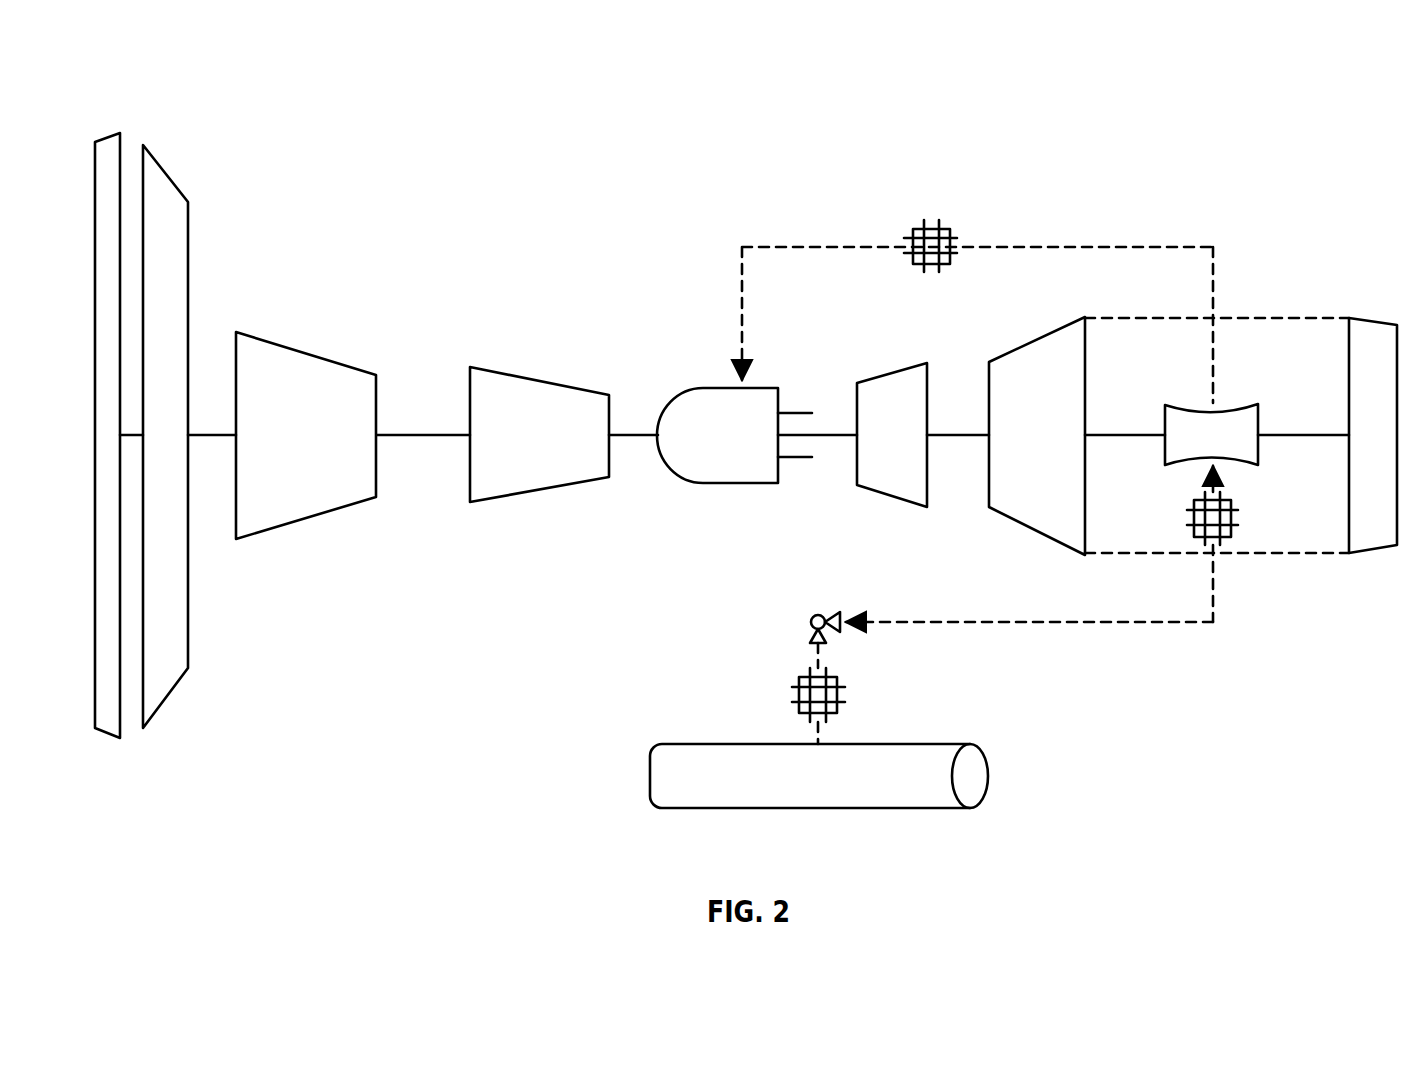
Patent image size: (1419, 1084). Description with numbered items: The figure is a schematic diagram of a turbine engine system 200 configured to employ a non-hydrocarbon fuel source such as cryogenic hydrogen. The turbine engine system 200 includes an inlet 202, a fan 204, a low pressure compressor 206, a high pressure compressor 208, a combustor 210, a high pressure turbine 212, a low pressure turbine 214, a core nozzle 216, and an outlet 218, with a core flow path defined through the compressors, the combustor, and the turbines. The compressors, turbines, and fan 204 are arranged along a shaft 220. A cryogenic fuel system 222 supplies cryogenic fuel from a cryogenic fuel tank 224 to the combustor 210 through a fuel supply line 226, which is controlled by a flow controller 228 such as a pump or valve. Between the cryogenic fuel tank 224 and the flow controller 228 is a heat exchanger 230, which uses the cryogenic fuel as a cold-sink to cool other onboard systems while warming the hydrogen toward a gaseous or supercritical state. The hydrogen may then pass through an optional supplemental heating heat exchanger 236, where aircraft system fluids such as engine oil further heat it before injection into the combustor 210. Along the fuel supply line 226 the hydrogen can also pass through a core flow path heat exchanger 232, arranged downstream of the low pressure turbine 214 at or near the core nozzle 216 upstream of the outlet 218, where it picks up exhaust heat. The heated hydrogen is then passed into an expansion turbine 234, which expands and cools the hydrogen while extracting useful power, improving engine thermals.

The turbine engine system 200 is at (1295, 128).
The inlet 202 is at (112, 145).
The fan 204 is at (165, 178).
The low pressure compressor 206 is at (290, 360).
The high pressure compressor 208 is at (527, 397).
The combustor 210 is at (758, 397).
The high pressure turbine 212 is at (897, 382).
The low pressure turbine 214 is at (1046, 341).
The core nozzle 216 is at (1302, 555).
The outlet 218 is at (1367, 330).
The shaft 220 is at (398, 432).
The cryogenic fuel system 222 is at (1010, 675).
The cryogenic fuel tank 224 is at (907, 793).
The fuel supply line 226 is at (950, 620).
The flow controller 228 is at (812, 620).
The heat exchanger 230 is at (840, 696).
The core flow path heat exchanger 232 is at (1225, 537).
The expansion turbine 234 is at (1230, 418).
The supplemental heating heat exchanger 236 is at (930, 222).